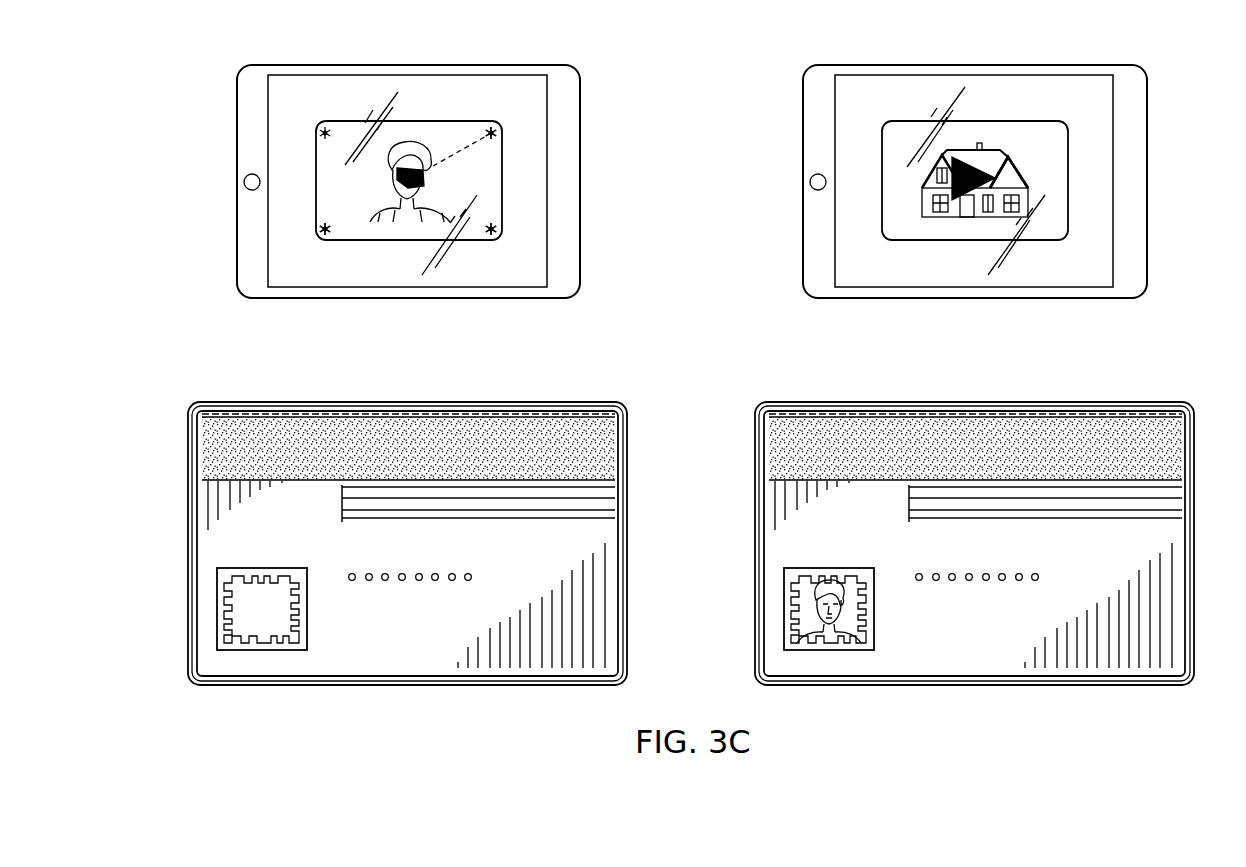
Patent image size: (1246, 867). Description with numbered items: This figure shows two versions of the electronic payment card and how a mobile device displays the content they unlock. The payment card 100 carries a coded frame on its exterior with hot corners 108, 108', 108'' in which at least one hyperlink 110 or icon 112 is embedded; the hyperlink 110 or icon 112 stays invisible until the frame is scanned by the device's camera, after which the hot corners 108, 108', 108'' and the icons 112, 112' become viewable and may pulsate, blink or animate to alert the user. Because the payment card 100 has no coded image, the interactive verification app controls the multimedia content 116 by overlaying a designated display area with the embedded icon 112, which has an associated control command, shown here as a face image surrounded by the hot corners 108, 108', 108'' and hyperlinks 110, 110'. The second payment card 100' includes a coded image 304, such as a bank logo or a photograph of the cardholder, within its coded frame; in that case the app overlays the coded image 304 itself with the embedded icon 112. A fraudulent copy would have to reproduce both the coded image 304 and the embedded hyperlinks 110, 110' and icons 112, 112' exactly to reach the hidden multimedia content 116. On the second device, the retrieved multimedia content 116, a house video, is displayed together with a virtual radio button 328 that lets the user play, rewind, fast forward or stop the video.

The hyperlink 110 is at (324, 78).
The hyperlink 110' is at (270, 282).
The hot corner 108 is at (568, 93).
The hot corner 108' is at (515, 284).
The hot corner 108'' is at (337, 289).
The icon 112 is at (572, 147).
The icon 112' is at (570, 235).
The virtual radio button 328 is at (982, 172).
The multimedia content 116 is at (1023, 170).
The payment card 100 is at (443, 543).
The payment card 100' is at (974, 519).
The coded image 304 is at (828, 633).